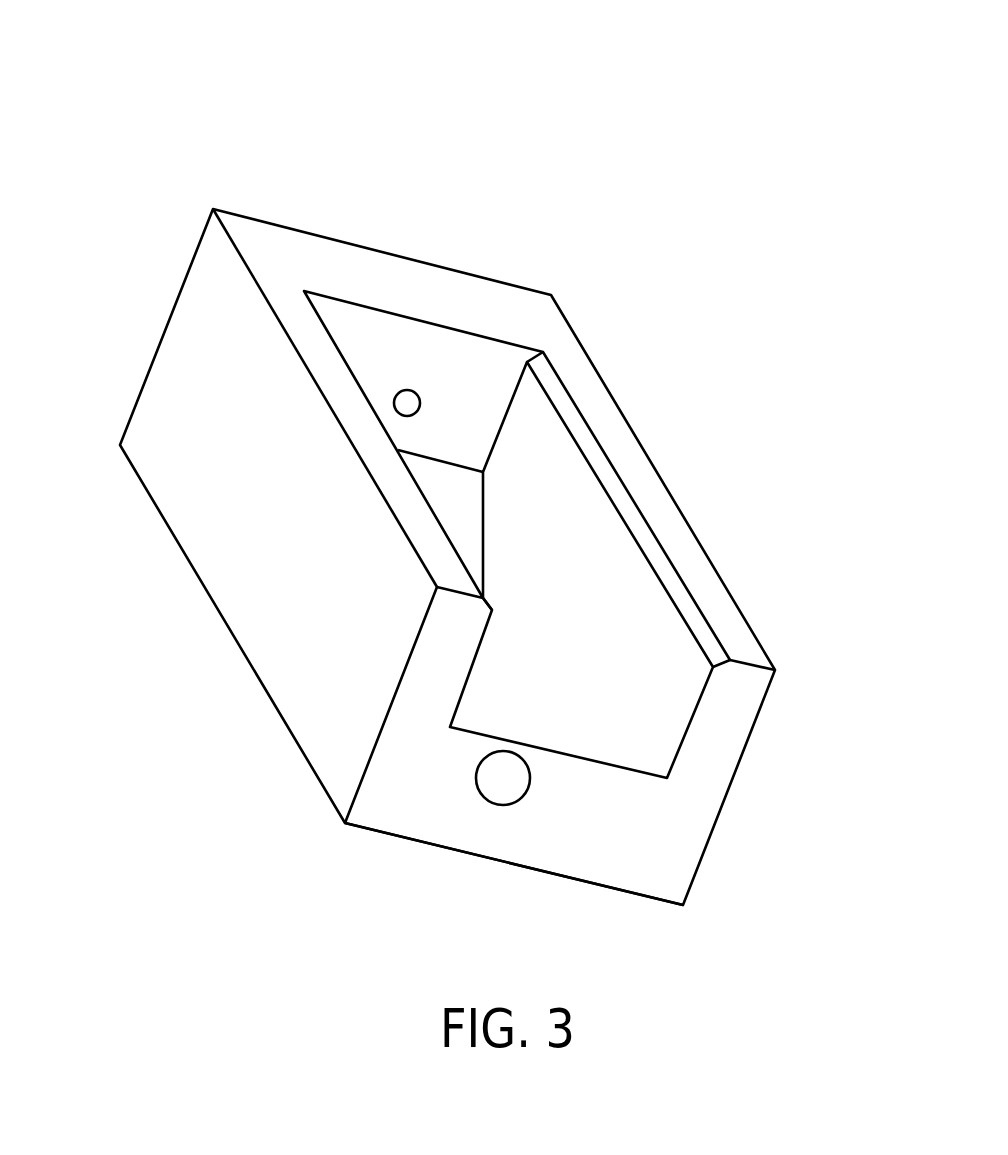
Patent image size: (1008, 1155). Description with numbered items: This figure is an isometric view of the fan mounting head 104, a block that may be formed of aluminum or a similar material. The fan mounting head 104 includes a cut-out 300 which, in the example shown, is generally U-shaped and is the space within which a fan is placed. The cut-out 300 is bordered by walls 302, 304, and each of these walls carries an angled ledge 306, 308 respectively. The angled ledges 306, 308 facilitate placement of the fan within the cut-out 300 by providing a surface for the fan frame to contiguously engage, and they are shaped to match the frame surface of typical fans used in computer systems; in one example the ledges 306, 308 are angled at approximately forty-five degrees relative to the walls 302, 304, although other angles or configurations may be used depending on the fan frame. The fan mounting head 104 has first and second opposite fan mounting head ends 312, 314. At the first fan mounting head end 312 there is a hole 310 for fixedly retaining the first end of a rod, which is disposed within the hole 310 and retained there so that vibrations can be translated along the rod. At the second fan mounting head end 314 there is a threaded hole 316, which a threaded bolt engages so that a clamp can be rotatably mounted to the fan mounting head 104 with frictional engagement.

The fan mounting head 104 is at (544, 105).
The cut-out 300 is at (555, 484).
The wall 302 is at (752, 727).
The wall 304 is at (430, 626).
The angled ledge 306 is at (700, 604).
The angled ledge 308 is at (476, 619).
The hole 310 is at (379, 396).
The first fan mounting head end 312 is at (430, 305).
The second fan mounting head end 314 is at (614, 836).
The threaded hole 316 is at (486, 817).